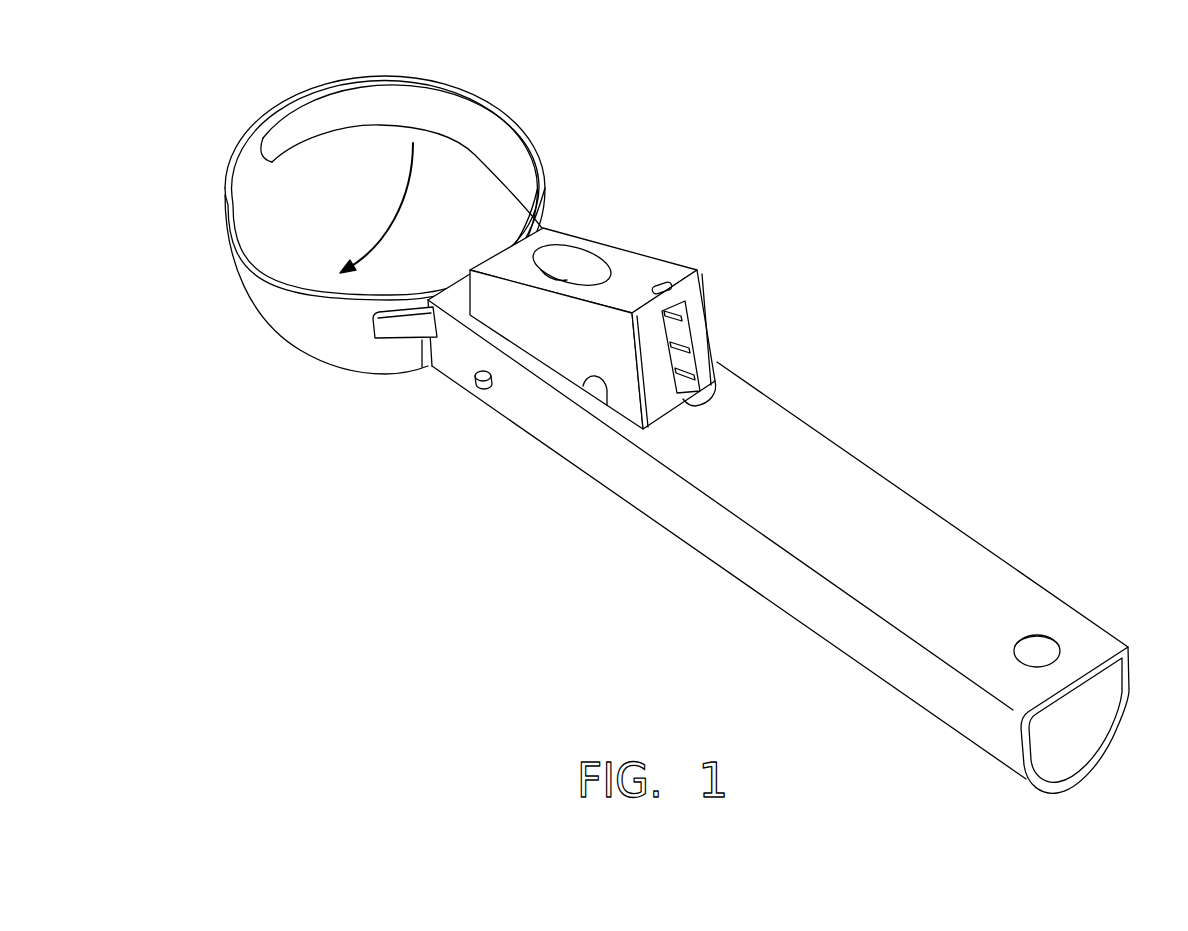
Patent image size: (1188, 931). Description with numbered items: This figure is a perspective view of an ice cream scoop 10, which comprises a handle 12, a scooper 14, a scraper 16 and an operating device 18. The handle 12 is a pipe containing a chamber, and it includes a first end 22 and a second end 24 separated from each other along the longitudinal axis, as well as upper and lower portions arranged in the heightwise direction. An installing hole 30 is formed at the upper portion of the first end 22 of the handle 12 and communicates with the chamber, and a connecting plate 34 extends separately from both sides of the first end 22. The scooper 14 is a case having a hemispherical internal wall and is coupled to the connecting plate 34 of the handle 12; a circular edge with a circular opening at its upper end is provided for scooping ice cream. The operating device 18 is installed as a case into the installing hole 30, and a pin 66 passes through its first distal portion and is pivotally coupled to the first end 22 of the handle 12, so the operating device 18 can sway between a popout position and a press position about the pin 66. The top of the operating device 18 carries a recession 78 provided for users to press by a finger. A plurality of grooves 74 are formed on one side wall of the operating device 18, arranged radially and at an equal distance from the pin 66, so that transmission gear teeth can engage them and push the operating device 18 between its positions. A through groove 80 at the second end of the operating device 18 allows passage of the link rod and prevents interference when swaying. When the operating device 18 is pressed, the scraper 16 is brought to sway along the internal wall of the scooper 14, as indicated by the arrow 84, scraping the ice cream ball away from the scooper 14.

The ice cream scoop 10 is at (676, 426).
The handle 12 is at (797, 514).
The scooper 14 is at (270, 290).
The scraper 16 is at (338, 110).
The operating device 18 is at (644, 309).
The first end 22 is at (464, 304).
The second end 24 is at (1097, 637).
The installing hole 30 is at (607, 405).
The connecting plate 34 is at (383, 328).
The pin 66 is at (483, 388).
The grooves 74 is at (683, 305).
The button 78 is at (575, 264).
The through groove 80 is at (700, 402).
The arrow 84 is at (407, 186).